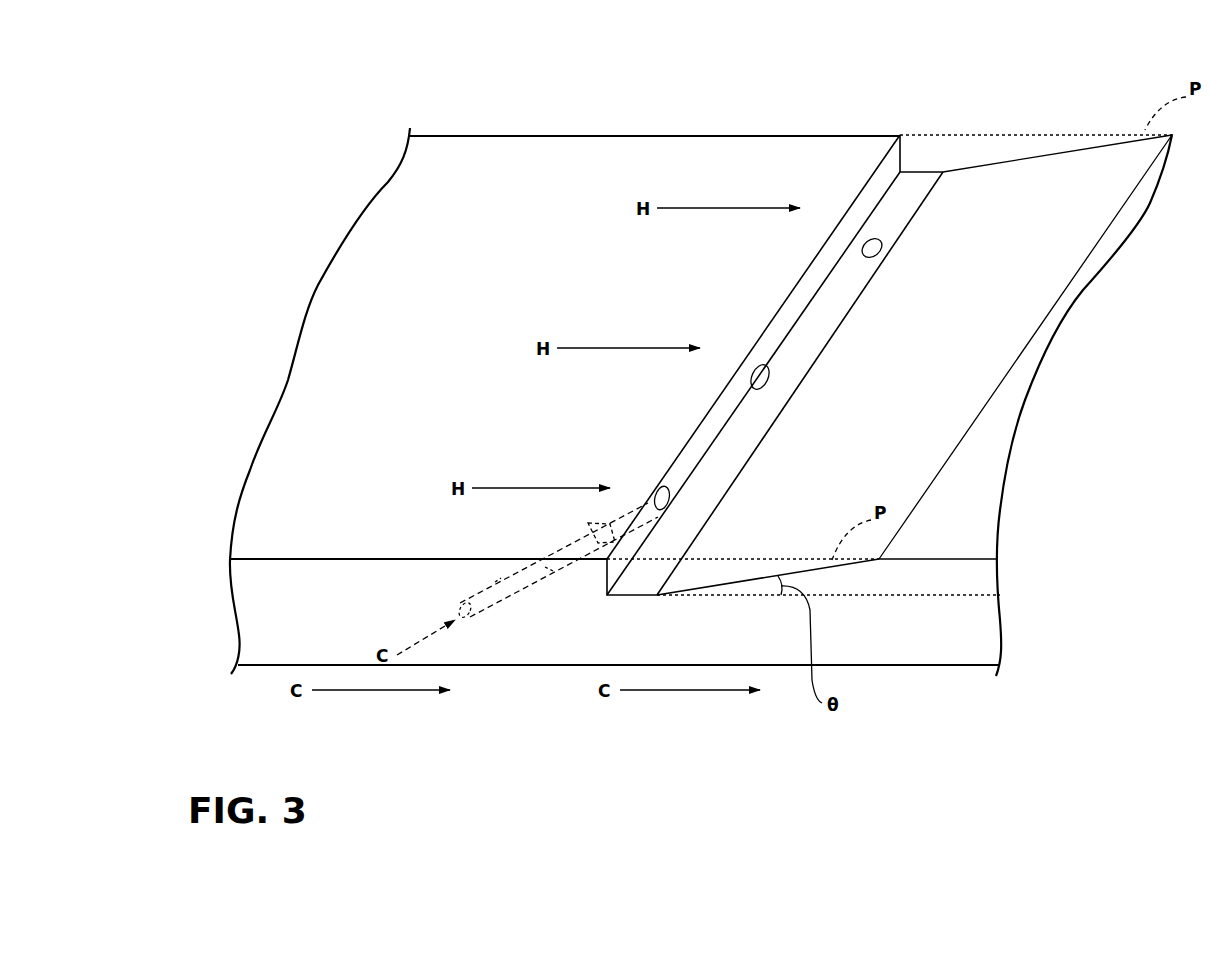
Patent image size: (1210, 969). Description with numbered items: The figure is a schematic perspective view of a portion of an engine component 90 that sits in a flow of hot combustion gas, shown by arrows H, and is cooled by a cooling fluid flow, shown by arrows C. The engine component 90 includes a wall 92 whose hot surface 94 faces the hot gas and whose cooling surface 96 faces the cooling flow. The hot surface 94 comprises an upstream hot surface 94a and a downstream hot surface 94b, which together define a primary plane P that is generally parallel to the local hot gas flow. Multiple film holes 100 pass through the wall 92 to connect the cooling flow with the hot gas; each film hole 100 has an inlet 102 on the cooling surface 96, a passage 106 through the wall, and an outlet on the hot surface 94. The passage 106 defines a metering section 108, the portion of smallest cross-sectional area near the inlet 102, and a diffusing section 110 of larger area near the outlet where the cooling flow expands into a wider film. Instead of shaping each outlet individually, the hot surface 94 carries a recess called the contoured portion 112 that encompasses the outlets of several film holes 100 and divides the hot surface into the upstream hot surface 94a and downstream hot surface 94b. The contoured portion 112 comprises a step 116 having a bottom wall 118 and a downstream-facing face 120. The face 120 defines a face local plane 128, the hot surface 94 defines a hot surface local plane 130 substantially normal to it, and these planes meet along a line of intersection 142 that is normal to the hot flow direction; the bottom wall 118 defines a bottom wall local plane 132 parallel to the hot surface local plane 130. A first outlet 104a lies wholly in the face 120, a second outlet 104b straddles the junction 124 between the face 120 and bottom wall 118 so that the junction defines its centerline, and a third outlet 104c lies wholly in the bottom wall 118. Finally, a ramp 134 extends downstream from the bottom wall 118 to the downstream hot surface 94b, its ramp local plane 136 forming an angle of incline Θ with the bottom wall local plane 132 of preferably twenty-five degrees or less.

The engine component 90 is at (970, 122).
The wall 92 is at (228, 560).
The hot surface 94 is at (293, 534).
The upstream hot surface 94a is at (538, 182).
The downstream hot surface 94b is at (955, 530).
The cooling surface 96 is at (972, 668).
The film hole 100 is at (858, 243).
The inlet 102 is at (470, 612).
The first outlet 104a is at (668, 488).
The second outlet 104b is at (765, 389).
The third outlet 104c is at (866, 258).
The passage 106 is at (500, 578).
The metering section 108 is at (550, 570).
The diffusing section 110 is at (602, 538).
The contoured portion 112 is at (1167, 86).
The step 116 is at (904, 135).
The bottom wall 118 is at (895, 206).
The face 120 is at (800, 303).
The junction 124 is at (690, 525).
The face local plane 128 is at (788, 341).
The hot surface local plane 130 is at (705, 167).
The bottom wall local plane 132 is at (860, 597).
The ramp 134 is at (1022, 183).
The ramp local plane 136 is at (790, 565).
The line of intersection 142 is at (680, 445).